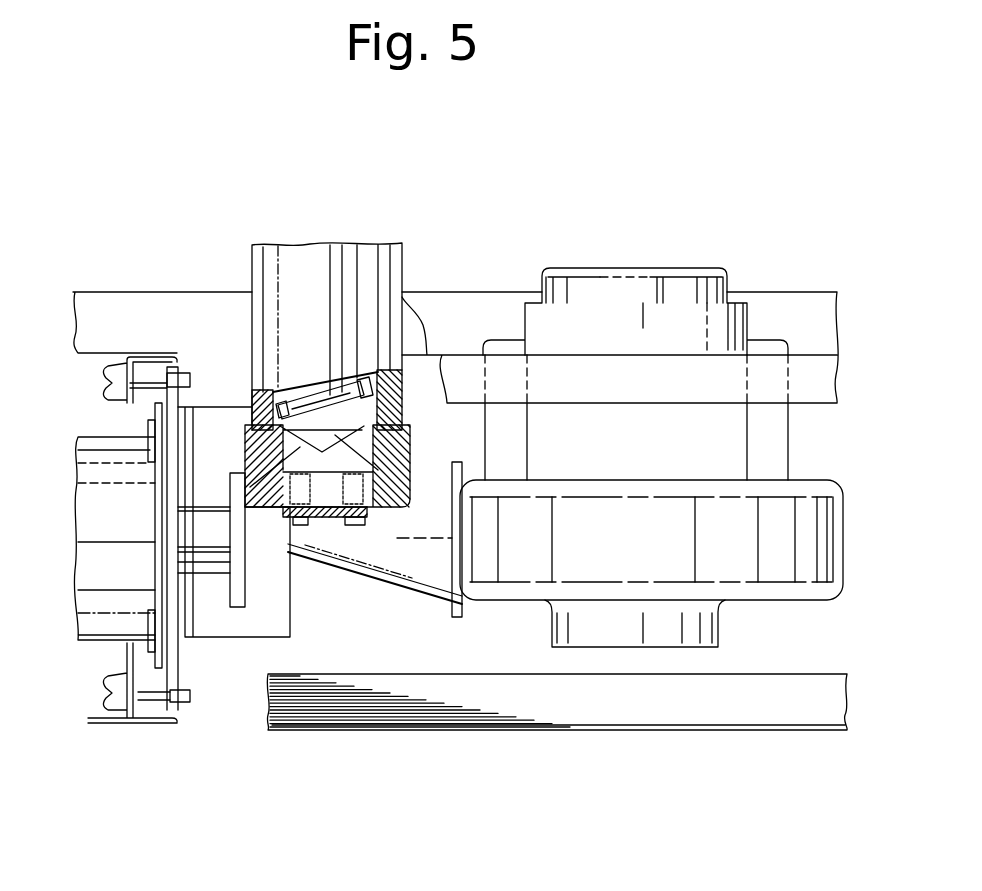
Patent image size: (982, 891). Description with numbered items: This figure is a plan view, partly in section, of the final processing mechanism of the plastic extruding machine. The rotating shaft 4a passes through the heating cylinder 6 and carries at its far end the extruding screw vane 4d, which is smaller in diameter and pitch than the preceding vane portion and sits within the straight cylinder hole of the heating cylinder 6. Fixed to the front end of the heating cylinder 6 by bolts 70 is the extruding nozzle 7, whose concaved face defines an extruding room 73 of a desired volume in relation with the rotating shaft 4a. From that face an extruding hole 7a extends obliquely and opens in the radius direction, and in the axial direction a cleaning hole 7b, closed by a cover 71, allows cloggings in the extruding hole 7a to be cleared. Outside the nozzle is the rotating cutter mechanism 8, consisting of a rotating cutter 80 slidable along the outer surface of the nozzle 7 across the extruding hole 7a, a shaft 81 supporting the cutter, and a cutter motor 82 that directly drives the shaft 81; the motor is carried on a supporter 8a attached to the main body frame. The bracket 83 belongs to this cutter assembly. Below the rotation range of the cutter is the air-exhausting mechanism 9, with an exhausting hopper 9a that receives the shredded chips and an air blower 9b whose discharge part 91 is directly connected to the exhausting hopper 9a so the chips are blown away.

The rotating shaft 4a is at (308, 392).
The extruding screw vane 4d is at (343, 352).
The heating cylinder 6 is at (370, 300).
The extruding nozzle 7 is at (407, 468).
The extruding room 73 is at (395, 455).
The extruding hole 7a is at (238, 470).
The cleaning hole 7b is at (333, 518).
The bolts 70 is at (383, 540).
The cover 71 is at (318, 547).
The rotating cutter mechanism 8 is at (207, 576).
The rotating cutter 80 is at (237, 600).
The shaft 81 is at (187, 533).
The cutter motor 82 is at (105, 620).
The bracket 83 is at (178, 405).
The supporter 8a is at (631, 717).
The air-exhausting mechanism 9 is at (470, 616).
The exhausting hopper 9a is at (292, 578).
The discharge part 91 is at (418, 572).
The air blower 9b is at (733, 577).